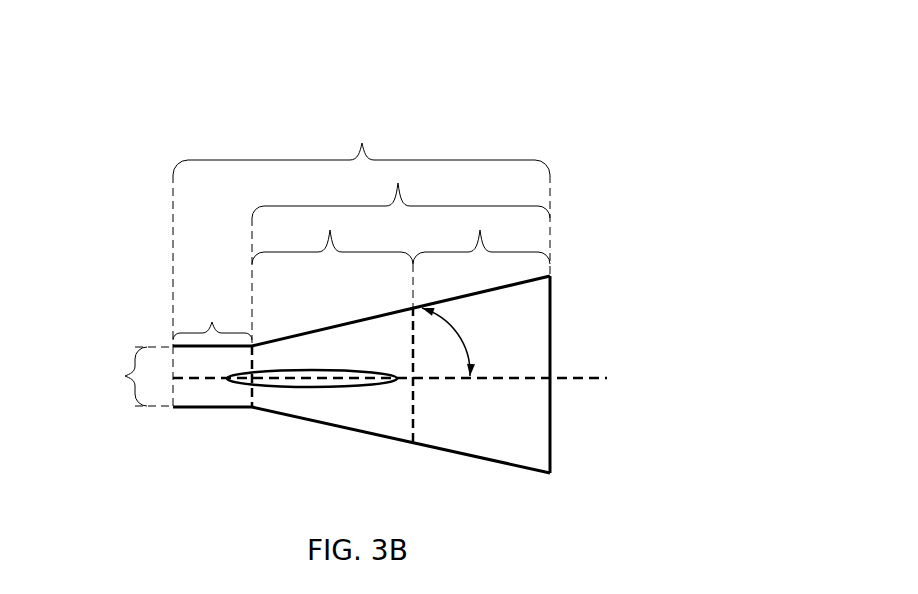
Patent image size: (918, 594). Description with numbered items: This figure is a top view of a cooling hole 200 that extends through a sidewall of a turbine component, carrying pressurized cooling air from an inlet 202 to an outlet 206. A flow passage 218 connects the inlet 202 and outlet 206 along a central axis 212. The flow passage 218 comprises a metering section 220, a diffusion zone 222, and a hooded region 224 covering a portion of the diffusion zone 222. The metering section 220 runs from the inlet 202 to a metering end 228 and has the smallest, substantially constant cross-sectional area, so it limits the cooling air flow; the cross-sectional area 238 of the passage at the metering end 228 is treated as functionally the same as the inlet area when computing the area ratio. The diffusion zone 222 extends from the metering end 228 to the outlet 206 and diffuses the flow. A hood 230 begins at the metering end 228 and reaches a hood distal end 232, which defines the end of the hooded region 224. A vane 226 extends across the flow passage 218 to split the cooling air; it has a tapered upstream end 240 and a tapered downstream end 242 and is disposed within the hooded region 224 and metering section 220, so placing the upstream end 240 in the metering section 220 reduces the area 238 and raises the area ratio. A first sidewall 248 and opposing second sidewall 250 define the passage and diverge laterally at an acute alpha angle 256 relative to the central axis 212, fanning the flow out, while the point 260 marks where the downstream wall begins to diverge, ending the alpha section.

The cooling hole 200 is at (168, 77).
The inlet 202 is at (125, 376).
The outlet 206 is at (480, 231).
The central axis 212 is at (582, 378).
The flow passage 218 is at (362, 143).
The metering section 220 is at (212, 323).
The diffusion zone 222 is at (398, 184).
The hooded region 224 is at (330, 231).
The vane 226 is at (372, 370).
The metering end 228 is at (251, 410).
The hood 230 is at (369, 410).
The hood distal end 232 is at (416, 408).
The cross-sectional area at the metering end 238 is at (227, 380).
The tapered upstream end 240 is at (258, 388).
The tapered downstream end 242 is at (388, 370).
The first sidewall 248 is at (288, 338).
The second sidewall 250 is at (326, 423).
The alpha angle 256 is at (460, 328).
The point where downstream wall begins to diverge 260 is at (552, 292).